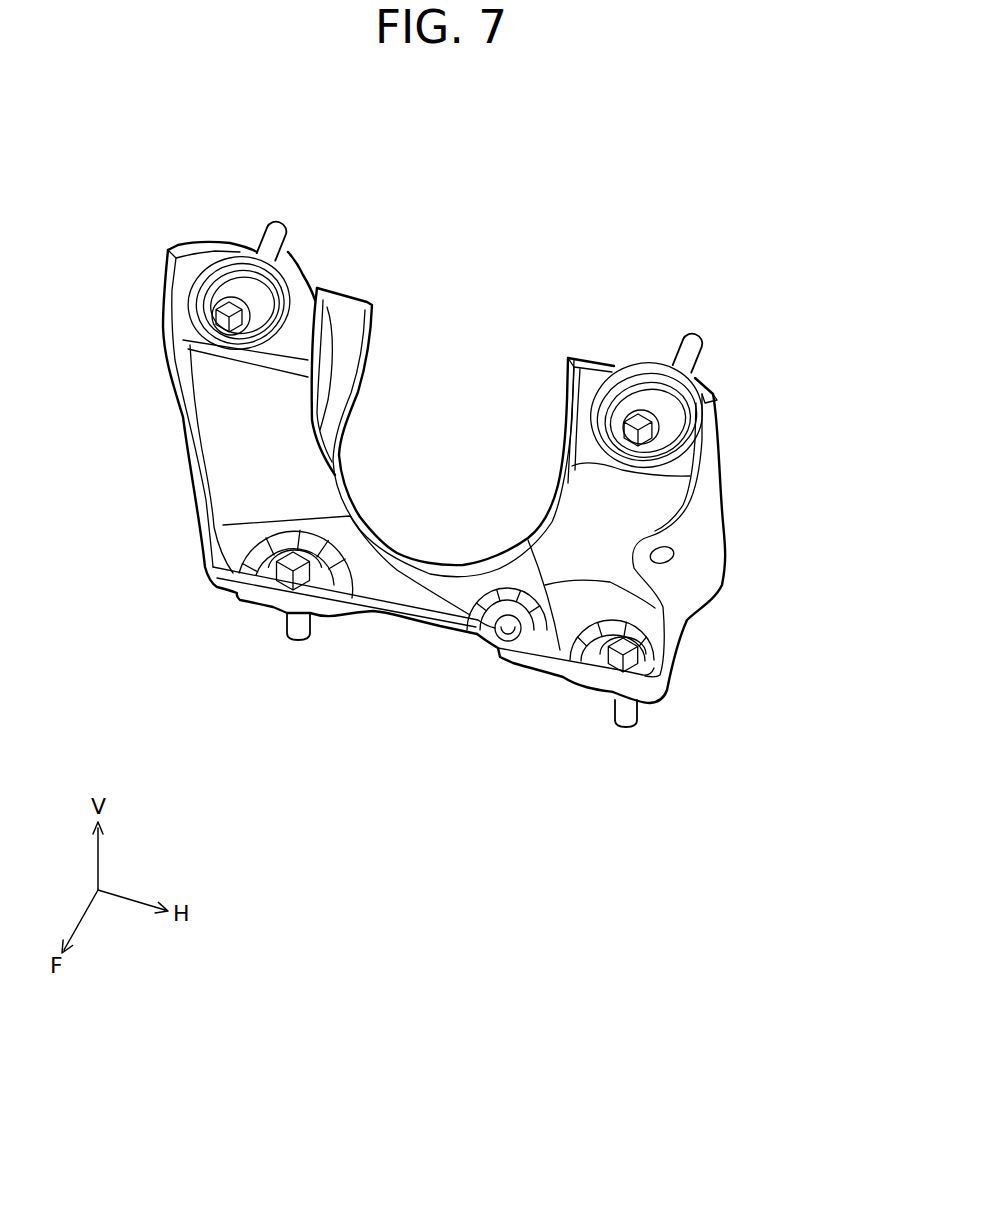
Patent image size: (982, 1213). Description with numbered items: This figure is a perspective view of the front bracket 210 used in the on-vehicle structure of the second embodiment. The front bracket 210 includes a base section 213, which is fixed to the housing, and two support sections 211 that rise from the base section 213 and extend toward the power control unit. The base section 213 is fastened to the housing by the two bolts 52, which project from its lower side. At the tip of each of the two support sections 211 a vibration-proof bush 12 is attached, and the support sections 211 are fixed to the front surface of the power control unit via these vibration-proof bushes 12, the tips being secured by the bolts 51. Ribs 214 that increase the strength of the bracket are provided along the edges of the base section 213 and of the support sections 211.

The front bracket 210 is at (141, 174).
The support section 211 is at (203, 368).
The base section 213 is at (407, 597).
The rib 214 is at (207, 527).
The vibration-proof bush 12 is at (256, 310).
The bolt 51 is at (277, 236).
The bolt 52 is at (300, 632).